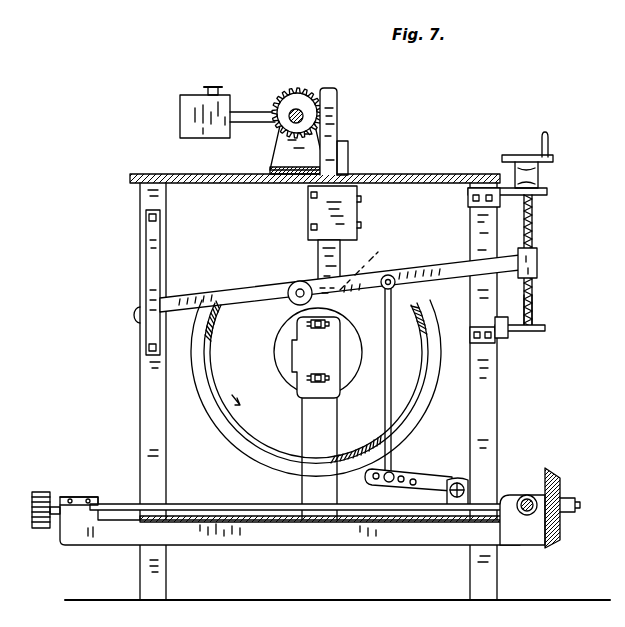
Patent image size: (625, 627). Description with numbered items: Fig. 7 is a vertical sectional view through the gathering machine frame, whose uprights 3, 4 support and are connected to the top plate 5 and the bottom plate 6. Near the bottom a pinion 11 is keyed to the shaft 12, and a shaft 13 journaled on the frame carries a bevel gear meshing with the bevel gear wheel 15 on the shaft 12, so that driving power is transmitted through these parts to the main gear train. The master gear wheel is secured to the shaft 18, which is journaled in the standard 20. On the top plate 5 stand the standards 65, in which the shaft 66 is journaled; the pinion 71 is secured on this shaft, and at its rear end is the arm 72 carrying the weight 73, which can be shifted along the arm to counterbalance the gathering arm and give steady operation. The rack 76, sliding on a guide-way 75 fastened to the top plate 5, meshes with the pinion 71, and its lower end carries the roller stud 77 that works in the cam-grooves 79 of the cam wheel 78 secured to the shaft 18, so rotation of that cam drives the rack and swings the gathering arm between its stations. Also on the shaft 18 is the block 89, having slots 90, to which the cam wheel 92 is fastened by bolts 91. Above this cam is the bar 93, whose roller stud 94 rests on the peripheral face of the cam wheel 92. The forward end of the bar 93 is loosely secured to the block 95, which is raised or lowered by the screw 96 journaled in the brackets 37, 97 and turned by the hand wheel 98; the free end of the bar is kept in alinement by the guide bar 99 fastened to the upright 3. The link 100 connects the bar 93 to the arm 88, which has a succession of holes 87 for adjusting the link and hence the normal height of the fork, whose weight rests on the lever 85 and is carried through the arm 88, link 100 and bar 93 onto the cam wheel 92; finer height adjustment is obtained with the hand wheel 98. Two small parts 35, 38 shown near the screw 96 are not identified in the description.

The upright 3 is at (140, 420).
The upright 4 is at (497, 436).
The top plate 5 is at (212, 183).
The bottom plate 6 is at (236, 527).
The pinion 11 is at (42, 492).
The shaft 12 is at (105, 503).
The shaft 13 is at (528, 515).
The bevel gear wheel 15 is at (558, 476).
The shaft 18 is at (333, 341).
The standard 20 is at (319, 456).
The screw block 35 is at (505, 340).
The bracket 37 is at (546, 331).
The screw lower portion 38 is at (535, 305).
The standards 65 is at (285, 150).
The shaft 66 is at (300, 105).
The pinion 71 is at (280, 97).
The arm 72 is at (246, 114).
The weight 73 is at (205, 95).
The guide-way 75 is at (349, 163).
The rack 76 is at (338, 104).
The roller stud 77 is at (380, 250).
The cam wheel 78 is at (316, 382).
The cam-grooves 79 is at (242, 437).
The lever 85 is at (457, 478).
The holes 87 is at (398, 472).
The arm 88 is at (424, 478).
The block 89 is at (302, 360).
The slots 90 is at (340, 379).
The bolts 91 is at (318, 383).
The cam wheel 92 is at (280, 347).
The bar 93 is at (181, 306).
The roller stud 94 is at (295, 281).
The block 95 is at (538, 262).
The screw 96 is at (533, 222).
The bracket 97 is at (518, 195).
The hand wheel 98 is at (550, 157).
The guide bar 99 is at (152, 256).
The link 100 is at (398, 358).